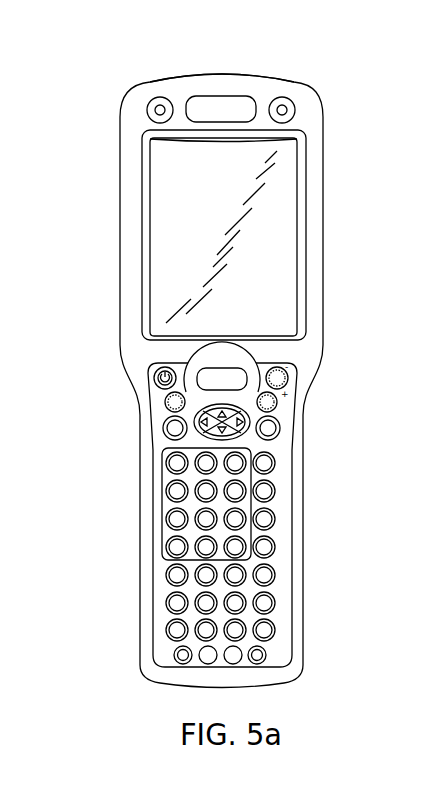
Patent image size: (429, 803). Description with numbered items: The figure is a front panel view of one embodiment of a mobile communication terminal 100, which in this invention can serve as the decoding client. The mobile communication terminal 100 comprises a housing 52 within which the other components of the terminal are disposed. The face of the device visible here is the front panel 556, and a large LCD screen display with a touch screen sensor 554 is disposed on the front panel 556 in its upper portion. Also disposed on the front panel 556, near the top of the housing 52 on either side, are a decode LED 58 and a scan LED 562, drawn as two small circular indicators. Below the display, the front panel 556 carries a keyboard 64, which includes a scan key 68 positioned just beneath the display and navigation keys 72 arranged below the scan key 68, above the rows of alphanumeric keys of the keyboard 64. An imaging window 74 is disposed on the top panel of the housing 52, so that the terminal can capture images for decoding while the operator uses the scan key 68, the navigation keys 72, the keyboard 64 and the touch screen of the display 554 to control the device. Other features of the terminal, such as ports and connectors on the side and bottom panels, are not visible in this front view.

The mobile communication terminal 100 is at (151, 68).
The imaging window 74 is at (220, 73).
The housing 52 is at (270, 78).
The decode LED 58 is at (148, 101).
The scan LED 562 is at (293, 102).
The front panel 556 is at (132, 197).
The LCD screen display with a touch screen sensor 554 is at (172, 249).
The scan key 68 is at (197, 368).
The navigation keys 72 is at (195, 415).
The keyboard 64 is at (183, 506).